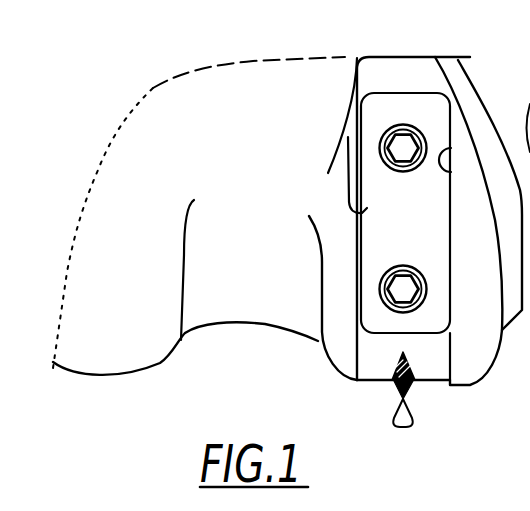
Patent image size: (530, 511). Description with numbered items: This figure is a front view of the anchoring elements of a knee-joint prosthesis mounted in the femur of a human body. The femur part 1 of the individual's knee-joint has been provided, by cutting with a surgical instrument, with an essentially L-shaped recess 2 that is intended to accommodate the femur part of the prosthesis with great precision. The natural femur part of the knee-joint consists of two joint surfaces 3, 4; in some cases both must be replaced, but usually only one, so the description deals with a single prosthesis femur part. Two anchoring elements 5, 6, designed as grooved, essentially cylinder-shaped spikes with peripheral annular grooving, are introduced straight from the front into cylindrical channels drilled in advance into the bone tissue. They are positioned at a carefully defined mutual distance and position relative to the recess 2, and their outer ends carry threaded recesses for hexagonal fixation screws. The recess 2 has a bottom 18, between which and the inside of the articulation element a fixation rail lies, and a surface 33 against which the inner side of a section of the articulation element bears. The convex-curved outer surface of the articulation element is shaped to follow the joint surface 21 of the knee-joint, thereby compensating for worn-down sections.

The femur part 1 is at (470, 90).
The recess 2 is at (452, 147).
The joint surface 3 is at (162, 363).
The joint surface 4 is at (328, 362).
The anchoring element 5 is at (397, 125).
The anchoring element 6 is at (421, 305).
The bottom of the recess 18 is at (348, 137).
The joint surface of the knee-joint 21 is at (468, 386).
The surface of the recess 33 is at (371, 342).